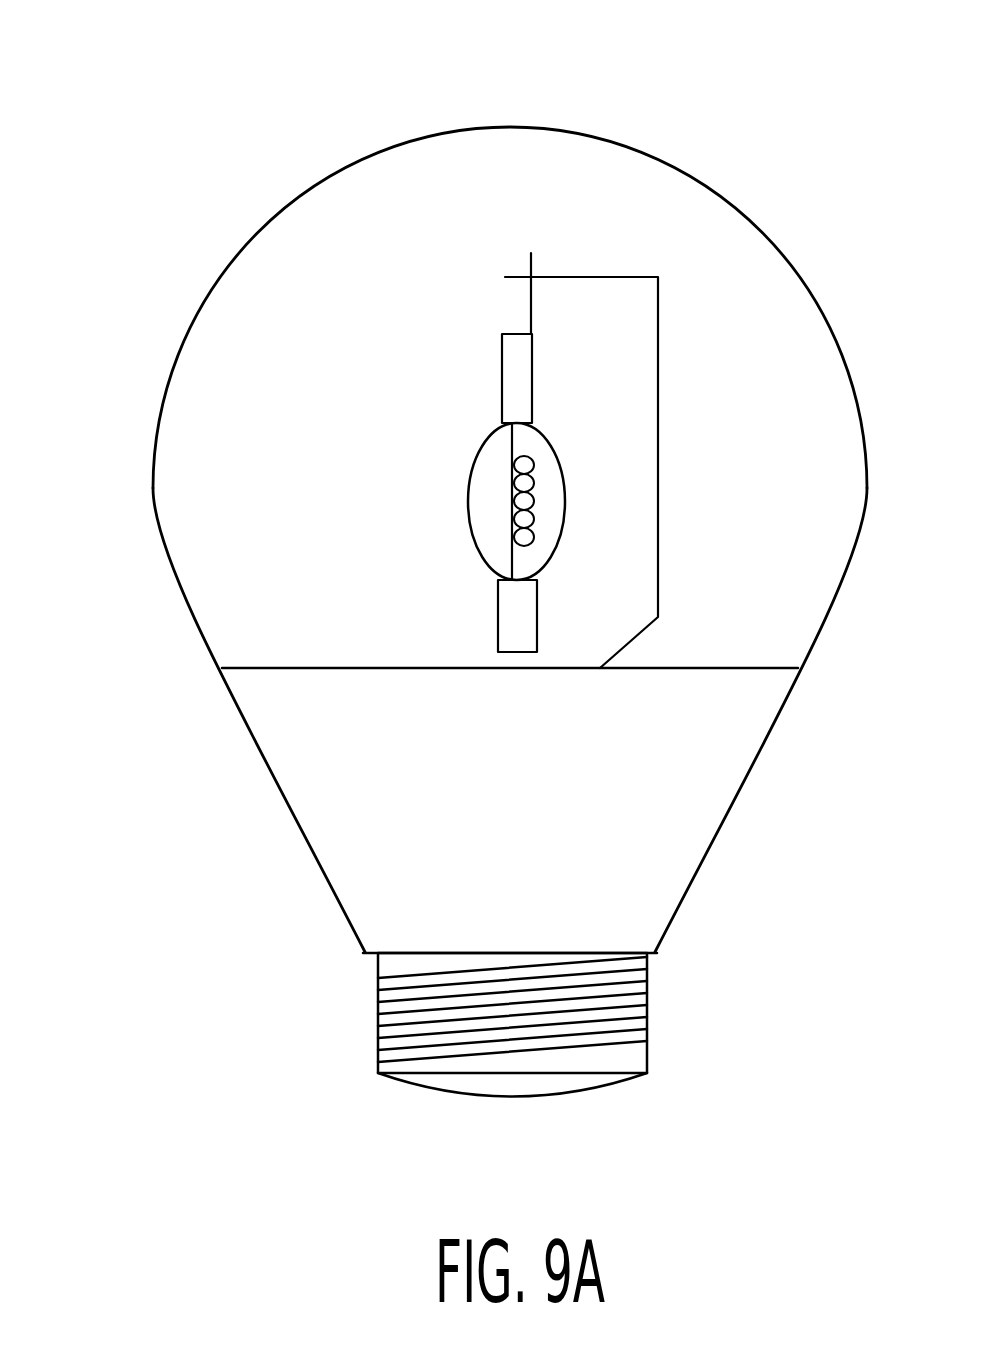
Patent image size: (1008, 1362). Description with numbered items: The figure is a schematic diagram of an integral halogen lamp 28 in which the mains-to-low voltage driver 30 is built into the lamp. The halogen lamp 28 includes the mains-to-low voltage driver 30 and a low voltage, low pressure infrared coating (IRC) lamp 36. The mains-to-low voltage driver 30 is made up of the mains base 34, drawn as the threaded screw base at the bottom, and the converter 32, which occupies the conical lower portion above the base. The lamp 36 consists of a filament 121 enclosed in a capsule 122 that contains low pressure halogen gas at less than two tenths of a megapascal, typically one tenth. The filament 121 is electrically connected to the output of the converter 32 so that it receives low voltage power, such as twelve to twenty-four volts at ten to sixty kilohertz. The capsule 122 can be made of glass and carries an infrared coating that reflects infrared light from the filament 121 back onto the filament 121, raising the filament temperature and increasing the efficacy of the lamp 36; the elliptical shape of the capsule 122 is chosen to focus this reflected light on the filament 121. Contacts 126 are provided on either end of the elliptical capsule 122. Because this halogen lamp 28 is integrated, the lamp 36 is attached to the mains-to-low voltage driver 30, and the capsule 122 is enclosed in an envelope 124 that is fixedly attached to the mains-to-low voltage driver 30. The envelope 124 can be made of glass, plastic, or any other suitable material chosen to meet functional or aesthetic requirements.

The halogen lamp 28 is at (890, 33).
The mains-to-low voltage driver 30 is at (203, 888).
The converter 32 is at (688, 805).
The mains base 34 is at (647, 1022).
The low voltage, low pressure IRC lamp 36 is at (462, 380).
The filament 121 is at (487, 502).
The capsule 122 is at (477, 457).
The envelope 124 is at (768, 237).
The contacts 126 is at (512, 348).